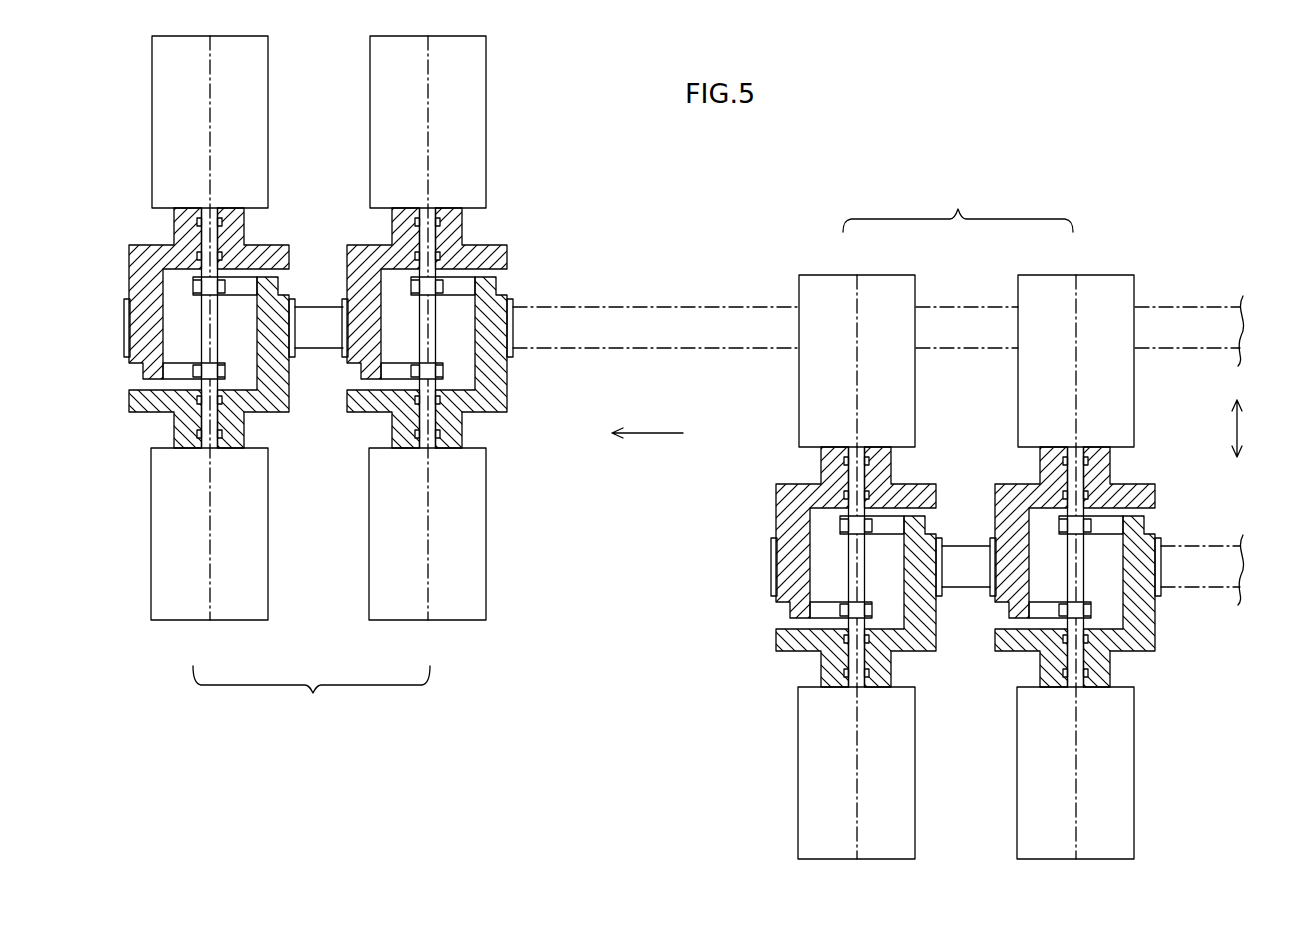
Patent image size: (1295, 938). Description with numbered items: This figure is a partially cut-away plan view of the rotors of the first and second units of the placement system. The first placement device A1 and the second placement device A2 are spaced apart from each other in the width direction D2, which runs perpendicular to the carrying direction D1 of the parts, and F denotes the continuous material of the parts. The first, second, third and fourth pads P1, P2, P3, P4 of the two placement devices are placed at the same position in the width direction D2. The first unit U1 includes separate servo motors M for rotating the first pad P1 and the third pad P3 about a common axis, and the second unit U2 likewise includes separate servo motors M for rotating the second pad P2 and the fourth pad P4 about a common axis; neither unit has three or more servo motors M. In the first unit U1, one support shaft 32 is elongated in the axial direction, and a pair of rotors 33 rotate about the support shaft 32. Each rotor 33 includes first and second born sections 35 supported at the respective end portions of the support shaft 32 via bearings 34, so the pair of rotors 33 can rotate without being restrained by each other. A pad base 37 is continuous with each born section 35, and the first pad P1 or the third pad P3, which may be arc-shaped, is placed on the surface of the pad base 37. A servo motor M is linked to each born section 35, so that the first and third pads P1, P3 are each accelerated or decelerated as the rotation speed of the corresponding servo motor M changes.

The support shaft 32 is at (207, 315).
The rotor 33 is at (148, 247).
The bearing 34 is at (230, 223).
The born section 35 is at (238, 237).
The pad base 37 is at (143, 340).
The servo motor M is at (172, 125).
The first pad P1 is at (128, 325).
The second pad P2 is at (347, 325).
The third pad P3 is at (290, 327).
The fourth pad P4 is at (510, 333).
The continuous material of the parts F is at (642, 308).
The first unit U1 is at (529, 451).
The second unit U2 is at (748, 451).
The first placement device A1 is at (311, 694).
The second placement device A2 is at (958, 205).
The carrying direction D1 is at (647, 420).
The width direction D2 is at (1256, 428).